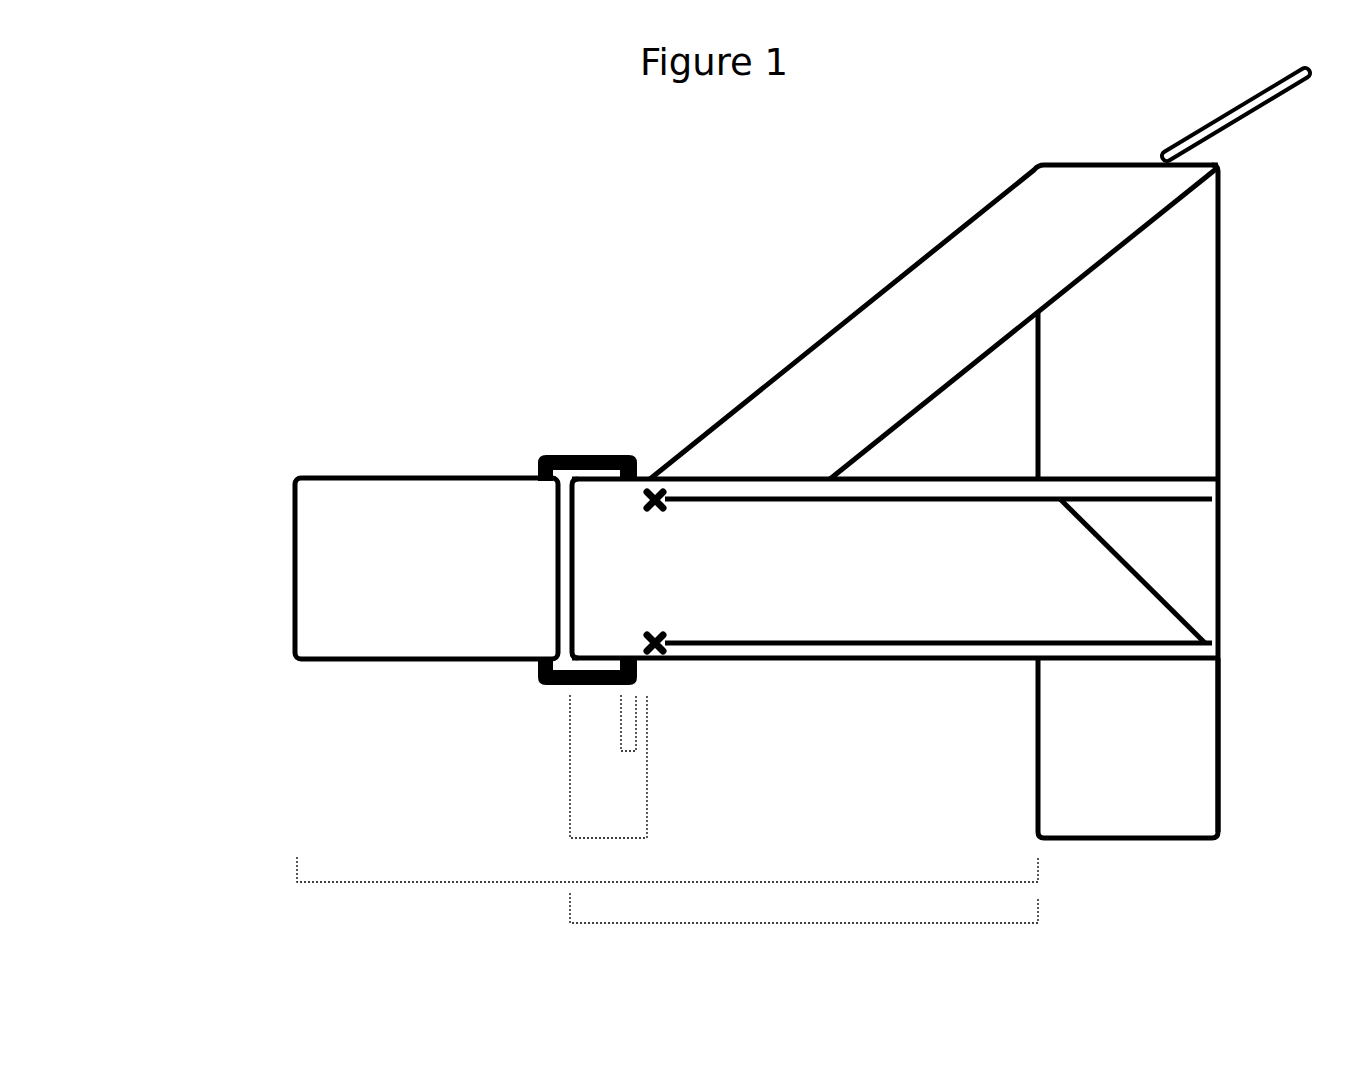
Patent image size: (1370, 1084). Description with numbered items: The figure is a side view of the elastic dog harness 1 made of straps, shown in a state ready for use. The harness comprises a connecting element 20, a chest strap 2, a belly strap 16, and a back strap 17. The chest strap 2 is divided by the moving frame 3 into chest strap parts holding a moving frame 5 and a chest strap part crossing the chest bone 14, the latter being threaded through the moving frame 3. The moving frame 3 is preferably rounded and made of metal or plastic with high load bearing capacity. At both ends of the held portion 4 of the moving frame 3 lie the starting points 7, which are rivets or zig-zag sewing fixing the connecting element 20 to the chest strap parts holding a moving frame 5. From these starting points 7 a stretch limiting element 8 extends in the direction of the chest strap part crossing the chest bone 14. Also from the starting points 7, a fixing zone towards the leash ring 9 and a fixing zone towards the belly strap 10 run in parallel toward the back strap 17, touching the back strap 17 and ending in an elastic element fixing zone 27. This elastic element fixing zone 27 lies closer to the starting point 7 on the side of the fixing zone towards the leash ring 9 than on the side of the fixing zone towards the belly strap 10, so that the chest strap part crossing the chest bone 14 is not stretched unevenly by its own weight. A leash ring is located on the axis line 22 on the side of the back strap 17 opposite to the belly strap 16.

The elastic dog harness 1 is at (947, 455).
The chest strap 2 is at (667, 882).
The moving frame 3 is at (635, 443).
The held portion 4 is at (628, 751).
The chest strap parts holding a moving frame 5 is at (805, 923).
The starting point 7 is at (664, 491).
The stretch limiting element 8 is at (608, 838).
The fixing zone towards the leash ring 9 is at (966, 497).
The fixing zone towards the belly strap 10 is at (900, 648).
The chest strap part crossing the chest bone 14 is at (282, 570).
The belly strap 16 is at (1232, 754).
The back strap 17 is at (1230, 330).
The connecting element 20 is at (920, 308).
The axis line 22 is at (1237, 113).
The elastic element fixing zone 27 is at (1120, 573).